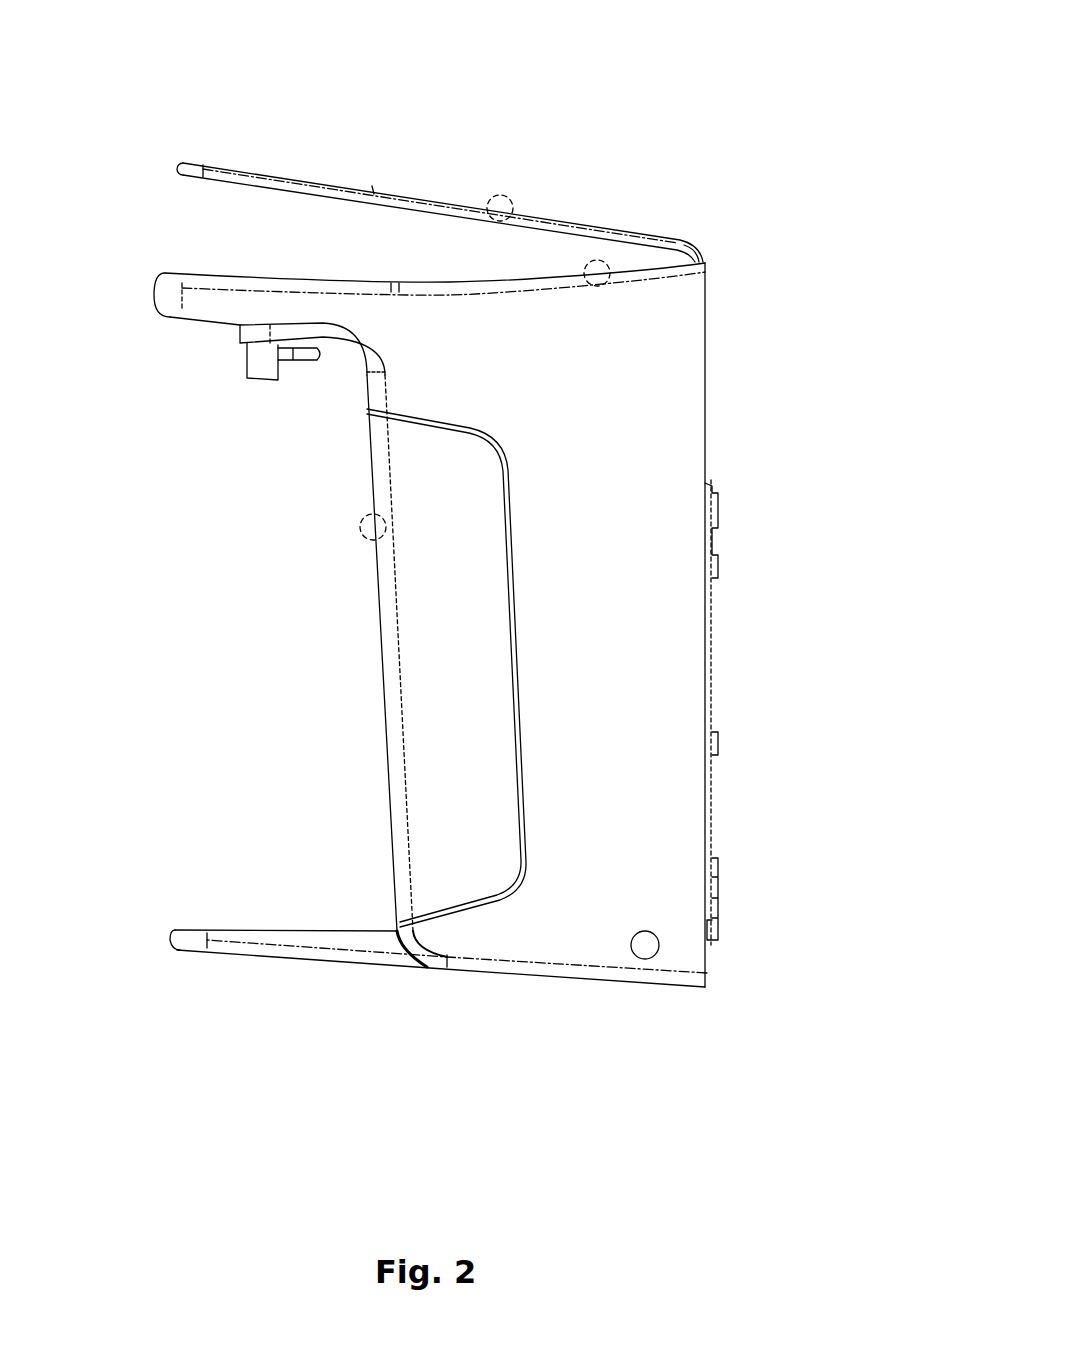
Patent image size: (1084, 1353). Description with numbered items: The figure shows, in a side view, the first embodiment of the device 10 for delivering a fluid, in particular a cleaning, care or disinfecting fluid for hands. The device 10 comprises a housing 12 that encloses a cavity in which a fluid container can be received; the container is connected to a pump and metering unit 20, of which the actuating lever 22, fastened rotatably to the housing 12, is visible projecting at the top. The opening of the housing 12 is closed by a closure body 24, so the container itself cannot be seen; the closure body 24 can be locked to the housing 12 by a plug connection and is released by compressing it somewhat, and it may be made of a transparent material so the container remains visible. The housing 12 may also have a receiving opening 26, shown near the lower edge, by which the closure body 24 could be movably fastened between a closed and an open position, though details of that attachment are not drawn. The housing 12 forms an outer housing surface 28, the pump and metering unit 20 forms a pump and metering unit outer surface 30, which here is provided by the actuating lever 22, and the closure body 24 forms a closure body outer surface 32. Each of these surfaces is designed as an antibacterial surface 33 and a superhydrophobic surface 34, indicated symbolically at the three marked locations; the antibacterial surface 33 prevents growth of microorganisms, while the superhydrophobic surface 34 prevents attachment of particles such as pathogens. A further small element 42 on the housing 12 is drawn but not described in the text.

The device 10 is at (733, 88).
The housing 12 is at (690, 550).
The pump and metering unit 20 is at (320, 420).
The actuating lever 22 is at (323, 183).
The closure body 24 is at (403, 758).
The receiving opening 26 is at (647, 953).
The outer housing surface 28 is at (603, 260).
The pump and metering unit outer surface 30 is at (503, 197).
The closure body outer surface 32 is at (360, 526).
The antibacterial surface 33 is at (426, 288).
The superhydrophobic surface 34 is at (426, 288).
The lug 42 is at (259, 378).